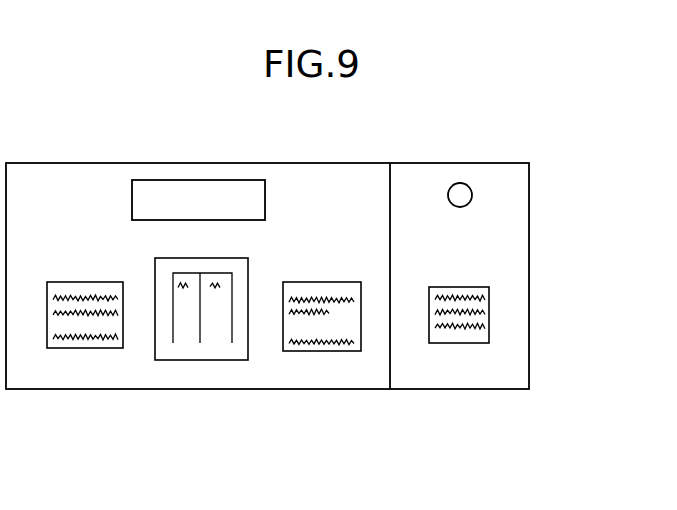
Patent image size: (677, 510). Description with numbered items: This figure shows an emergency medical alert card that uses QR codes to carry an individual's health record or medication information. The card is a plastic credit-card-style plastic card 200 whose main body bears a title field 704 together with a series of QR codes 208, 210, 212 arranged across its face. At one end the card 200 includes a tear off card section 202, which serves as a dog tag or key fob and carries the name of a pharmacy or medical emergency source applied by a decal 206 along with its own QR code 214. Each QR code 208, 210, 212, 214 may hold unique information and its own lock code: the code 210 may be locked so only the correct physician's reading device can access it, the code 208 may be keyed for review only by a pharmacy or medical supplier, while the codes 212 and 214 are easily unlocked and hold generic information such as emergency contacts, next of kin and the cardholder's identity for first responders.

The plastic card 200 is at (282, 175).
The tear off card section 202 is at (495, 180).
The RX/MGD title field 704 is at (265, 203).
The decal 206 is at (515, 242).
The QR code 208 is at (87, 340).
The QR code 210 is at (210, 353).
The QR code 212 is at (318, 350).
The QR code 214 is at (488, 312).